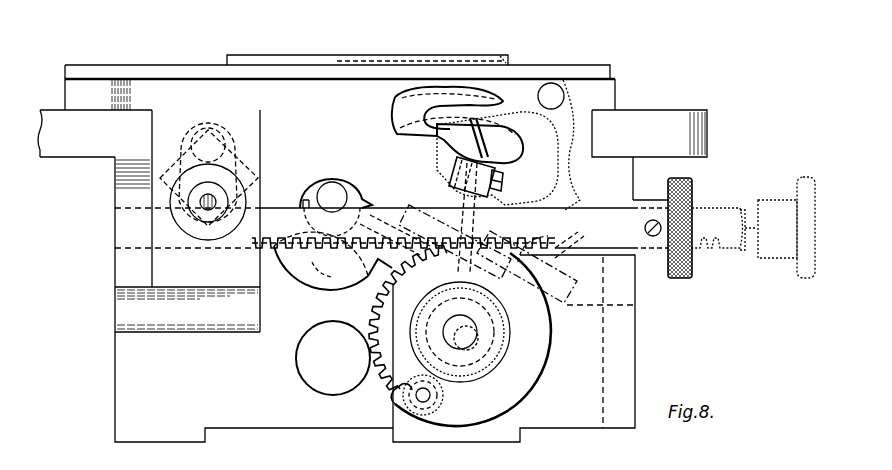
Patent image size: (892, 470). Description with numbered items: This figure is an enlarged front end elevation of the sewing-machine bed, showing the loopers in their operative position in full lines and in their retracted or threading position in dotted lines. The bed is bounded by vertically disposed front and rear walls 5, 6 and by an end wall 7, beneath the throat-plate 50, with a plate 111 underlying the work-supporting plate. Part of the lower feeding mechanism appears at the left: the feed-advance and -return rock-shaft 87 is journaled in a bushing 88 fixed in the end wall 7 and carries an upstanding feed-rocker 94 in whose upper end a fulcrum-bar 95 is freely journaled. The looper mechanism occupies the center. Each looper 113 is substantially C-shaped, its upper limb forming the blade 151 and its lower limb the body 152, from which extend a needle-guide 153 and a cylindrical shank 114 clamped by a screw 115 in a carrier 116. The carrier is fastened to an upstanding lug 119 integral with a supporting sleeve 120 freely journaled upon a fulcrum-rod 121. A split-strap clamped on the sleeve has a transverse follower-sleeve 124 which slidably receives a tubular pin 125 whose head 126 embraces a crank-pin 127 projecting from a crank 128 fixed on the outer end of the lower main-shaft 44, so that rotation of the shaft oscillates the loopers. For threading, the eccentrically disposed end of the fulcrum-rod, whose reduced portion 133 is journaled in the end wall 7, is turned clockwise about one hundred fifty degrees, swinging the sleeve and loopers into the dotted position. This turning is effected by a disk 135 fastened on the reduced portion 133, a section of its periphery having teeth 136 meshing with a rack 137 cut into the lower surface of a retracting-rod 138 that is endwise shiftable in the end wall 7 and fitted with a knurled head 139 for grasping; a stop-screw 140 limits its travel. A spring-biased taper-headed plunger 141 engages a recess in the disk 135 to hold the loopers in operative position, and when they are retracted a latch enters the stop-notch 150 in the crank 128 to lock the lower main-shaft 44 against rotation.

The front wall 5 is at (635, 177).
The rear wall 6 is at (115, 238).
The end wall 7 is at (593, 330).
The lower main-shaft 44 is at (340, 278).
The throat-plate 50 is at (303, 62).
The feed-advance and -return rock-shaft 87 is at (207, 212).
The bushing 88 is at (196, 225).
The feed-rocker 94 is at (196, 162).
The fulcrum-bar 95 is at (210, 128).
The plate 111 is at (172, 77).
The looper 113 is at (403, 122).
The cylindrical shank 114 is at (453, 164).
The screw 115 is at (504, 179).
The carrier 116 is at (470, 186).
The upstanding lug 119 is at (530, 246).
The supporting sleeve 120 is at (510, 338).
The fulcrum-rod 121 is at (432, 377).
The follower-sleeve 124 is at (458, 213).
The tubular pin 125 is at (418, 212).
The head 126 is at (320, 194).
The crank-pin 127 is at (331, 193).
The crank 128 is at (306, 280).
The reduced portion 133 is at (468, 348).
The disk 135 is at (541, 388).
The teeth 136 is at (382, 374).
The rack 137 is at (272, 252).
The retracting-rod 138 is at (718, 207).
The knurled head 139 is at (685, 278).
The stop-screw 140 is at (310, 214).
The taper-headed plunger 141 is at (437, 398).
The stop-notch 150 is at (374, 291).
The blade 151 is at (505, 98).
The body 152 is at (412, 132).
The needle-guide 153 is at (506, 120).